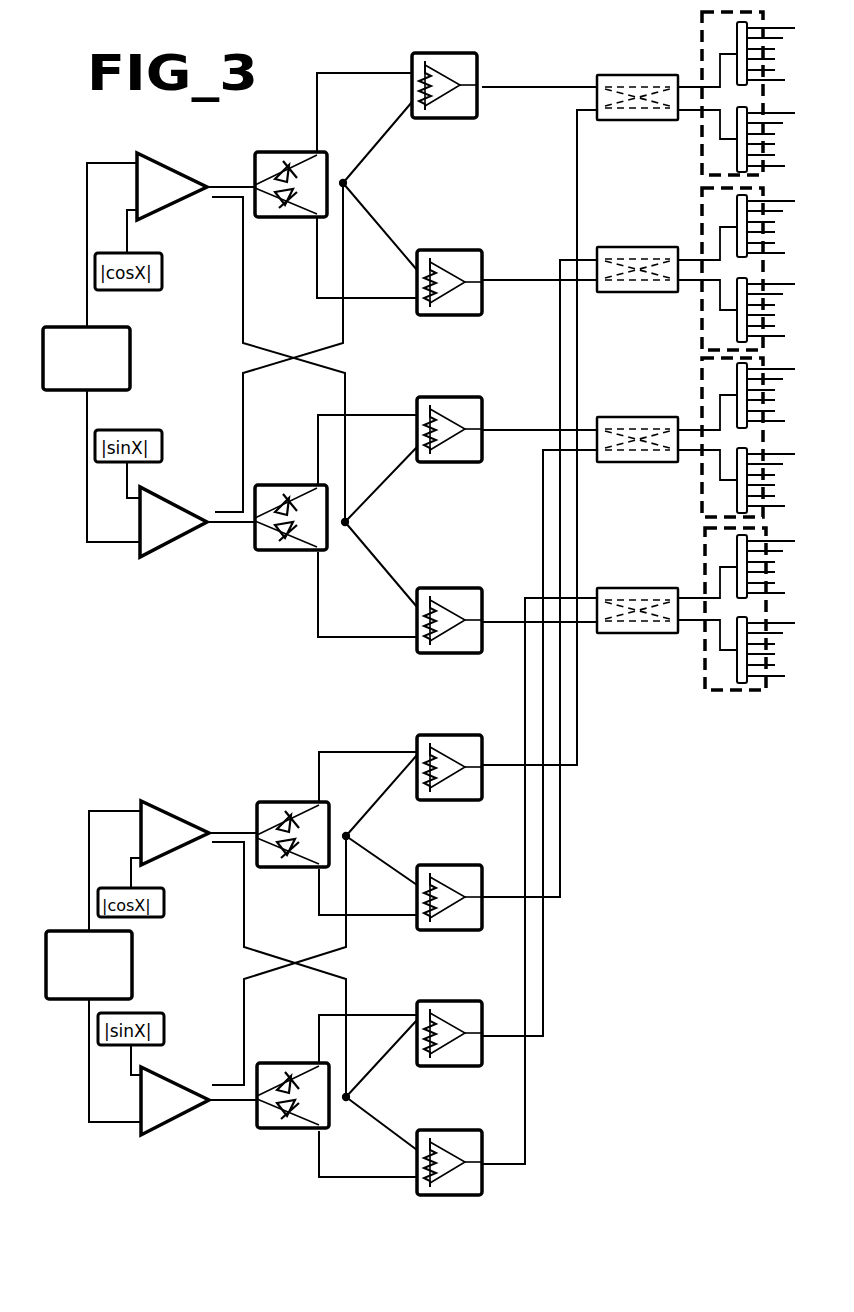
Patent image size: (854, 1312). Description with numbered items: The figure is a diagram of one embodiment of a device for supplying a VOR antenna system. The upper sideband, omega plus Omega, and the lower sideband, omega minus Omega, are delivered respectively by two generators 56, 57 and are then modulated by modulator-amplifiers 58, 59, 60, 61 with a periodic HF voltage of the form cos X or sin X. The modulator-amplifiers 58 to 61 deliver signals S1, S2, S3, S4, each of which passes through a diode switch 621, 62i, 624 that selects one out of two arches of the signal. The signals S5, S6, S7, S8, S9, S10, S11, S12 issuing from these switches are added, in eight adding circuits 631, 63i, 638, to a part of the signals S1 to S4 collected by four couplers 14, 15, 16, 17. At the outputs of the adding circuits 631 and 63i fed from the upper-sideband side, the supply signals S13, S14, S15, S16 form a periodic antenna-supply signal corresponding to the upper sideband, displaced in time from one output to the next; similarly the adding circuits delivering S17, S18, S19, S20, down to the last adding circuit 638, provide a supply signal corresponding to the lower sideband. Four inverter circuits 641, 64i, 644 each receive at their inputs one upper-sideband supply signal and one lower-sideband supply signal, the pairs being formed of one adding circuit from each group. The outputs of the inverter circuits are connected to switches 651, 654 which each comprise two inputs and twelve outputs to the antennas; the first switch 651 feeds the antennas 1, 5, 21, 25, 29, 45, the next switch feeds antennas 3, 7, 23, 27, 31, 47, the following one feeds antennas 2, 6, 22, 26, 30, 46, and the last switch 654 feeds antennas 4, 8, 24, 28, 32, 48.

The terminal 1 is at (779, 26).
The terminal 2 is at (779, 367).
The terminal 3 is at (779, 199).
The terminal 4 is at (779, 539).
The terminal 5 is at (773, 39).
The terminal 6 is at (773, 380).
The terminal 7 is at (773, 212).
The terminal 8 is at (773, 552).
The coupler 14 is at (232, 200).
The coupler 15 is at (232, 513).
The coupler 16 is at (234, 845).
The coupler 17 is at (234, 1085).
The terminal 21 is at (779, 83).
The terminal 22 is at (779, 424).
The terminal 23 is at (779, 256).
The terminal 24 is at (779, 596).
The terminal 25 is at (786, 108).
The terminal 26 is at (786, 449).
The terminal 27 is at (786, 279).
The terminal 28 is at (786, 618).
The terminal 29 is at (775, 124).
The terminal 30 is at (775, 465).
The terminal 31 is at (775, 295).
The terminal 32 is at (775, 634).
The terminal 45 is at (779, 172).
The terminal 46 is at (779, 512).
The terminal 47 is at (779, 342).
The terminal 48 is at (779, 682).
The generator 56 is at (72, 300).
The generator 57 is at (74, 905).
The modulator-amplifier 58 is at (181, 168).
The modulator-amplifier 59 is at (188, 543).
The modulator-amplifier 60 is at (184, 813).
The modulator-amplifier 61 is at (188, 1126).
The diode switch 621 is at (298, 150).
The diode switch 62i is at (291, 517).
The diode switch 624 is at (302, 1062).
The adding circuit 631 is at (460, 120).
The adding circuit 63i is at (458, 588).
The adding circuit 638 is at (462, 1130).
The inverter circuit 641 is at (644, 75).
The inverter circuit 64i is at (648, 417).
The inverter circuit 644 is at (650, 588).
The switch 651 is at (736, 98).
The switch 654 is at (737, 610).
The signal S1 is at (226, 171).
The signal S2 is at (229, 539).
The signal S3 is at (228, 818).
The signal S4 is at (231, 1118).
The signal S5 is at (364, 112).
The signal S6 is at (367, 257).
The signal S7 is at (367, 450).
The signal S8 is at (367, 594).
The signal S9 is at (368, 777).
The signal S10 is at (368, 892).
The signal S11 is at (368, 1039).
The signal S12 is at (368, 1155).
The signal S13 is at (539, 76).
The signal S14 is at (539, 269).
The signal S15 is at (539, 416).
The signal S16 is at (539, 608).
The signal S17 is at (539, 439).
The signal S18 is at (539, 579).
The signal S19 is at (539, 744).
The signal S20 is at (539, 882).